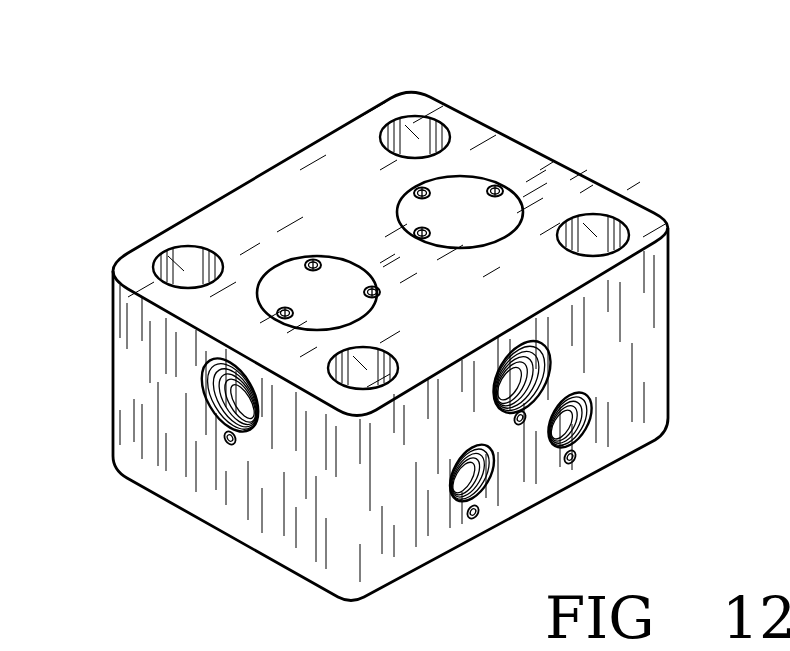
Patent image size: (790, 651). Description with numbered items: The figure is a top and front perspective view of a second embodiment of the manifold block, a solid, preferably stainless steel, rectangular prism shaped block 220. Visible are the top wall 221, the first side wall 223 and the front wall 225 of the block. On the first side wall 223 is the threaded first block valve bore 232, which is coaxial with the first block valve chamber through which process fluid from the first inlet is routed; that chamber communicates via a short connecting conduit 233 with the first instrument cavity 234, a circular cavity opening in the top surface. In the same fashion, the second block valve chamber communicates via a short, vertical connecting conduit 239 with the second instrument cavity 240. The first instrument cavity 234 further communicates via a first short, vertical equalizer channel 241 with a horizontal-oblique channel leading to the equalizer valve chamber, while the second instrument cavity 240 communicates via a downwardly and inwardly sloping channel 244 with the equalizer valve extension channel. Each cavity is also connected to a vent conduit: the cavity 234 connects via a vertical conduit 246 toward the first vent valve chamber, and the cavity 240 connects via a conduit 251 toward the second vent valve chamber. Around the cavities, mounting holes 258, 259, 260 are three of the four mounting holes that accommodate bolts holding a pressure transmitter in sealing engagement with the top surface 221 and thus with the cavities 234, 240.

The block 220 is at (390, 325).
The top wall 221 is at (587, 236).
The first side wall 223 is at (307, 513).
The front wall 225 is at (413, 530).
The threaded first block valve bore 232 is at (207, 413).
The short connecting conduit 233 is at (268, 308).
The first instrument cavity 234 is at (341, 306).
The short vertical connecting conduit 239 is at (530, 188).
The second instrument cavity 240 is at (482, 224).
The first short vertical equalizer channel 241 is at (372, 290).
The downwardly and inwardly sloping channel 244 is at (496, 188).
The vertical conduit 246 is at (308, 262).
The conduit 251 is at (423, 230).
The mounting hole 258 is at (183, 270).
The mounting hole 259 is at (422, 130).
The mounting hole 260 is at (612, 228).